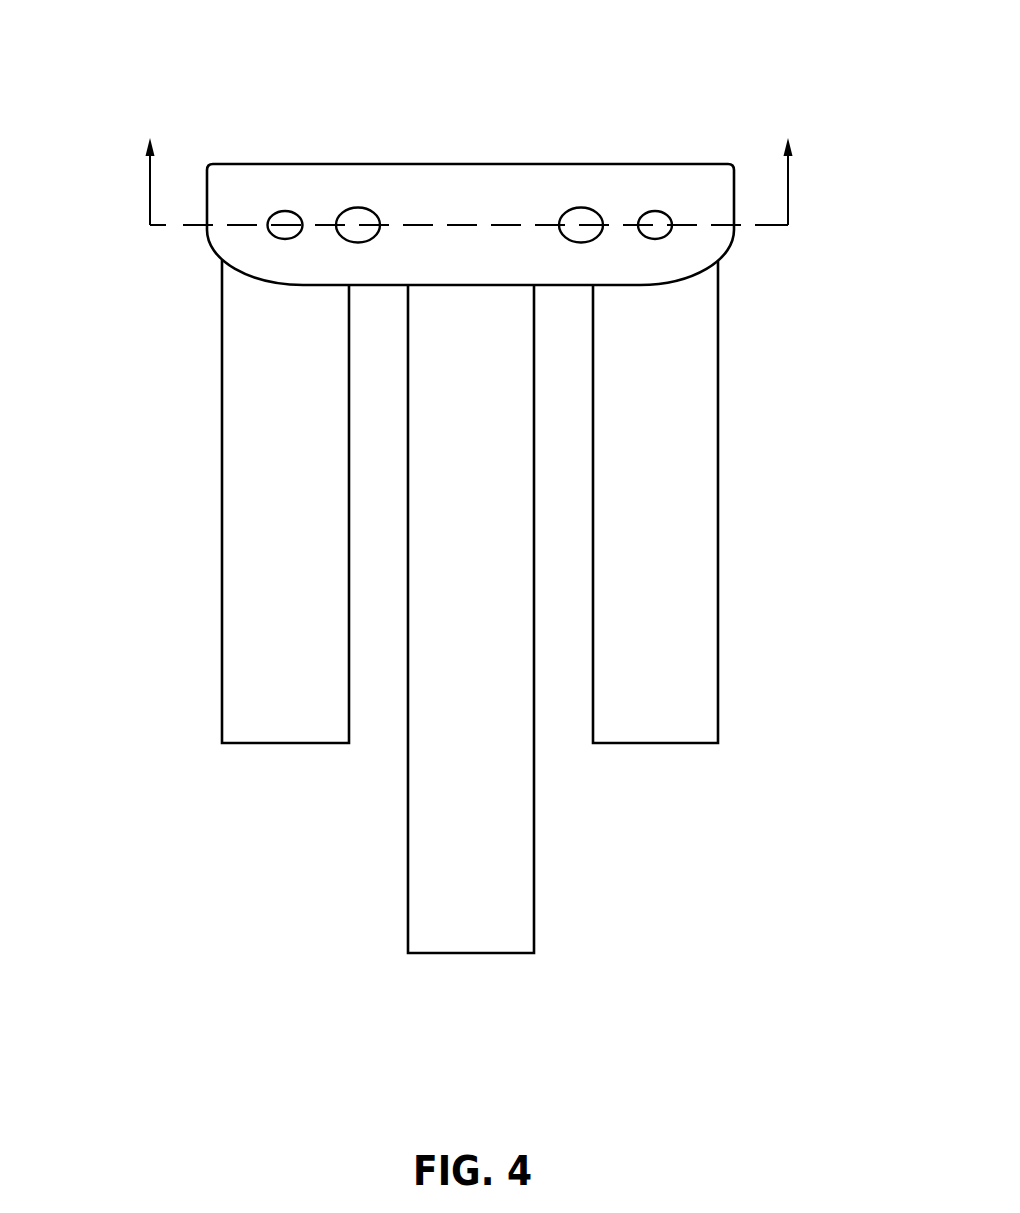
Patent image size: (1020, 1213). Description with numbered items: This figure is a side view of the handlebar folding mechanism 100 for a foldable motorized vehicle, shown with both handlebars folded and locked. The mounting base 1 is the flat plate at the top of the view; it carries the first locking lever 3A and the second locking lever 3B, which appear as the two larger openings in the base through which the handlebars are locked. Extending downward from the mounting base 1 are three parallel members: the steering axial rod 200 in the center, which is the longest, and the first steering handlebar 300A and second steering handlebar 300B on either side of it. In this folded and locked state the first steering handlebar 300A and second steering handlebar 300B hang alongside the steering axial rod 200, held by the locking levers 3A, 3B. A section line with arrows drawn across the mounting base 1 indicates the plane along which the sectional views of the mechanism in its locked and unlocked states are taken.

The handlebar folding mechanism 100 is at (160, 78).
The mounting base 1 is at (468, 210).
The first locking lever 3A is at (358, 222).
The second locking lever 3B is at (585, 220).
The steering axial rod 200 is at (487, 875).
The first steering handlebar 300A is at (273, 515).
The second steering handlebar 300B is at (668, 515).